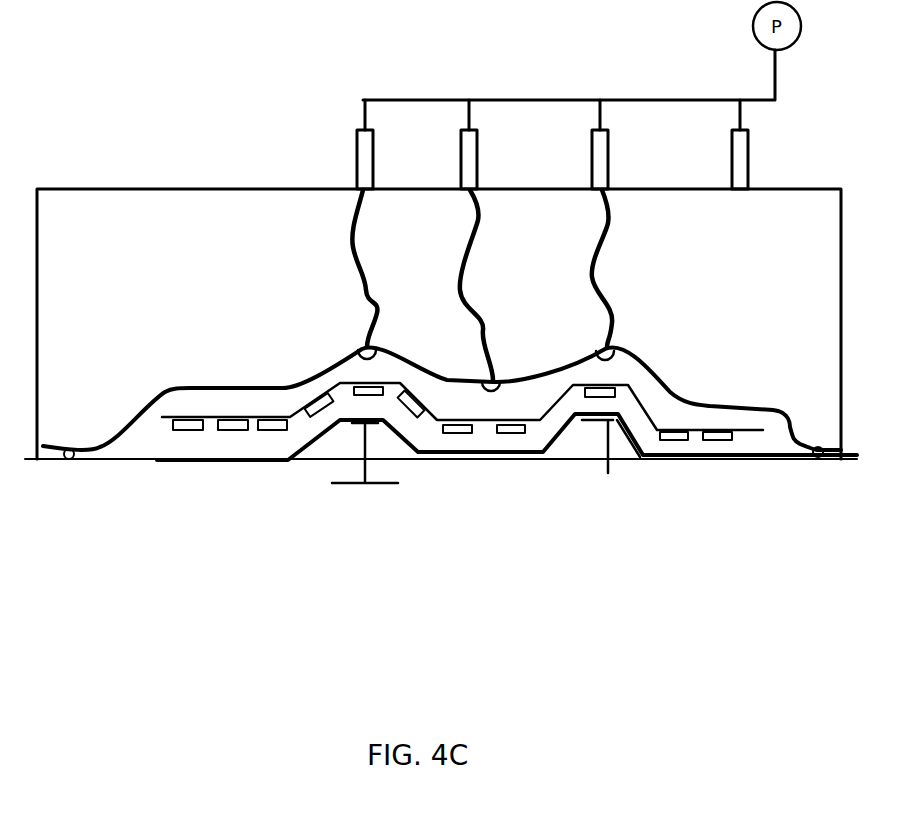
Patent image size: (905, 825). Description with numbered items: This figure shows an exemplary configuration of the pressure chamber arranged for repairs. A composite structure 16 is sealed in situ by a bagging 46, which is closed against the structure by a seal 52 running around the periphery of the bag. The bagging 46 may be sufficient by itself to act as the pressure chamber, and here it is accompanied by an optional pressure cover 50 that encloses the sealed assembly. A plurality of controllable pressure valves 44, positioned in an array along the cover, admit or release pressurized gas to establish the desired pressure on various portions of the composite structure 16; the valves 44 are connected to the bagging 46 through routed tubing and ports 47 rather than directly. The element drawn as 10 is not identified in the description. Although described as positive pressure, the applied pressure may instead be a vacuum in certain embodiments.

The pressure cover 50 is at (232, 189).
The controllable pressure valves 44 is at (373, 164).
The routed tubing and ports 47 is at (373, 295).
The flexible membrane 10 is at (250, 390).
The bagging 46 is at (327, 391).
The composite structure 16 is at (250, 390).
The seal 52 is at (70, 460).